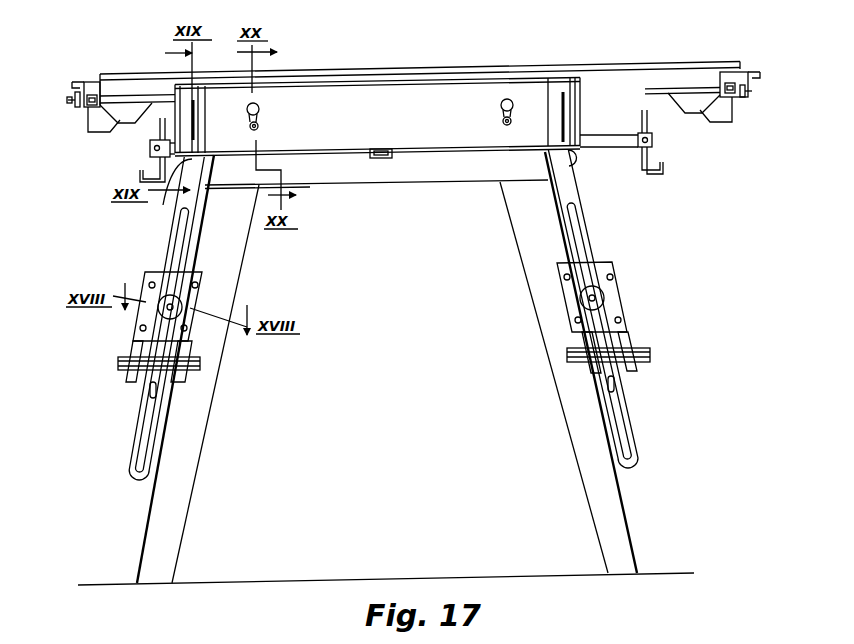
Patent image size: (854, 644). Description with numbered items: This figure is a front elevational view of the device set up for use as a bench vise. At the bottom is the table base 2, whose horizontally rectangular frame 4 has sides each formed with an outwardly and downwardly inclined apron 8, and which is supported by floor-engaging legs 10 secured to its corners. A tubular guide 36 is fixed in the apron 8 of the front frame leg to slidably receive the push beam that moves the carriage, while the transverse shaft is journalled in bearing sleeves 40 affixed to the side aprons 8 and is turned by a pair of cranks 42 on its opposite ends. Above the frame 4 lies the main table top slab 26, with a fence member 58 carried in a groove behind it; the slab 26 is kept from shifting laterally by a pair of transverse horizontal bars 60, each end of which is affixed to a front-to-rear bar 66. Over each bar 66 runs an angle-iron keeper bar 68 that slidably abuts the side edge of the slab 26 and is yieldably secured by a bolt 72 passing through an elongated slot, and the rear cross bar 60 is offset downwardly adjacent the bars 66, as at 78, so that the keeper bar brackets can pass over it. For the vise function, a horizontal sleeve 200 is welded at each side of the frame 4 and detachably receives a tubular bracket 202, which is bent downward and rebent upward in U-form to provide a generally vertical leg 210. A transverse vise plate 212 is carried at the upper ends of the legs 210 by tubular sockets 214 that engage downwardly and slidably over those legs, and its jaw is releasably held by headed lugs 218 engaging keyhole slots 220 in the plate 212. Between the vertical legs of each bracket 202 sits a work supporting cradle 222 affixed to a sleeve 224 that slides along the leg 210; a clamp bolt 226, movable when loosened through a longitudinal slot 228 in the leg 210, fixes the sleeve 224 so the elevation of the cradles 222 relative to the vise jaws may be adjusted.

The table base 2 is at (455, 186).
The horizontally rectangular frame 4 is at (326, 185).
The apron 8 is at (412, 183).
The floor-engaging legs 10 is at (156, 547).
The main table top slab 26 is at (618, 72).
The tubular guide 36 is at (379, 160).
The bearing sleeves 40 is at (610, 135).
The cranks 42 is at (141, 178).
The fence member 58 is at (559, 64).
The horizontal bars 60 is at (116, 108).
The horizontal bar 66 is at (80, 108).
The keeper bar 68 is at (85, 80).
The bolt 72 is at (72, 100).
The downward offset 78 is at (96, 132).
The horizontal sleeve 200 is at (582, 166).
The tubular bracket 202 is at (134, 445).
The vertical leg 210 is at (572, 189).
The vise plate 212 is at (392, 80).
The tubular sockets 214 is at (206, 140).
The headed lugs 218 is at (259, 127).
The keyhole slots 220 is at (260, 108).
The work supporting cradle 222 is at (118, 364).
The sleeve 224 is at (172, 283).
The clamp bolt 226 is at (167, 309).
The slot 228 is at (152, 390).